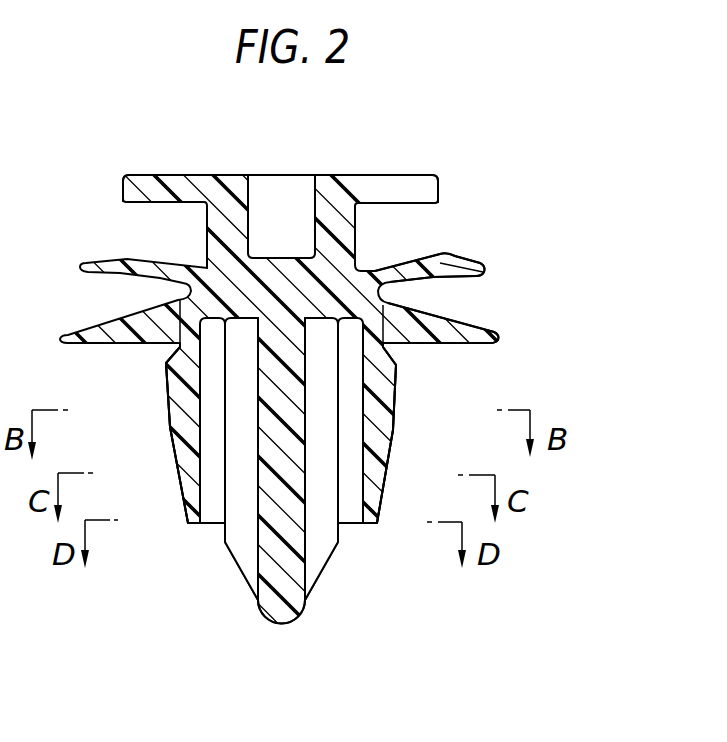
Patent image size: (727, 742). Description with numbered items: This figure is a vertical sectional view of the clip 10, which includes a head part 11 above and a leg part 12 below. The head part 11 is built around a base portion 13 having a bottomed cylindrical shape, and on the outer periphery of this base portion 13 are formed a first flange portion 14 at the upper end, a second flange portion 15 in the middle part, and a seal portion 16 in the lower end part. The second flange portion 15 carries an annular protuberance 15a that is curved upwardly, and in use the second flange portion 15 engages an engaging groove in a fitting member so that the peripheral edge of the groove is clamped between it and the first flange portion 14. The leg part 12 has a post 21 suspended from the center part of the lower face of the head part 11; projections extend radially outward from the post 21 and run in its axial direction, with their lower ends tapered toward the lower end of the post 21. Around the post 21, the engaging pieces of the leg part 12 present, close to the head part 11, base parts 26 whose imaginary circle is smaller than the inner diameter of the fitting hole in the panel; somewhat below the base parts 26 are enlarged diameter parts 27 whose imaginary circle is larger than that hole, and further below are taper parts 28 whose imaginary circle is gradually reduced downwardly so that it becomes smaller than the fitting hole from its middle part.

The clip 10 is at (96, 163).
The head part 11 is at (534, 211).
The leg part 12 is at (526, 537).
The base portion 13 is at (345, 228).
The first flange portion 14 is at (392, 186).
The second flange portion 15 is at (483, 268).
The annular protuberance 15a is at (438, 262).
The seal portion 16 is at (476, 330).
The post 21 is at (272, 560).
The base parts 26 is at (170, 341).
The enlarged diameter parts 27 is at (164, 402).
The taper parts 28 is at (184, 470).